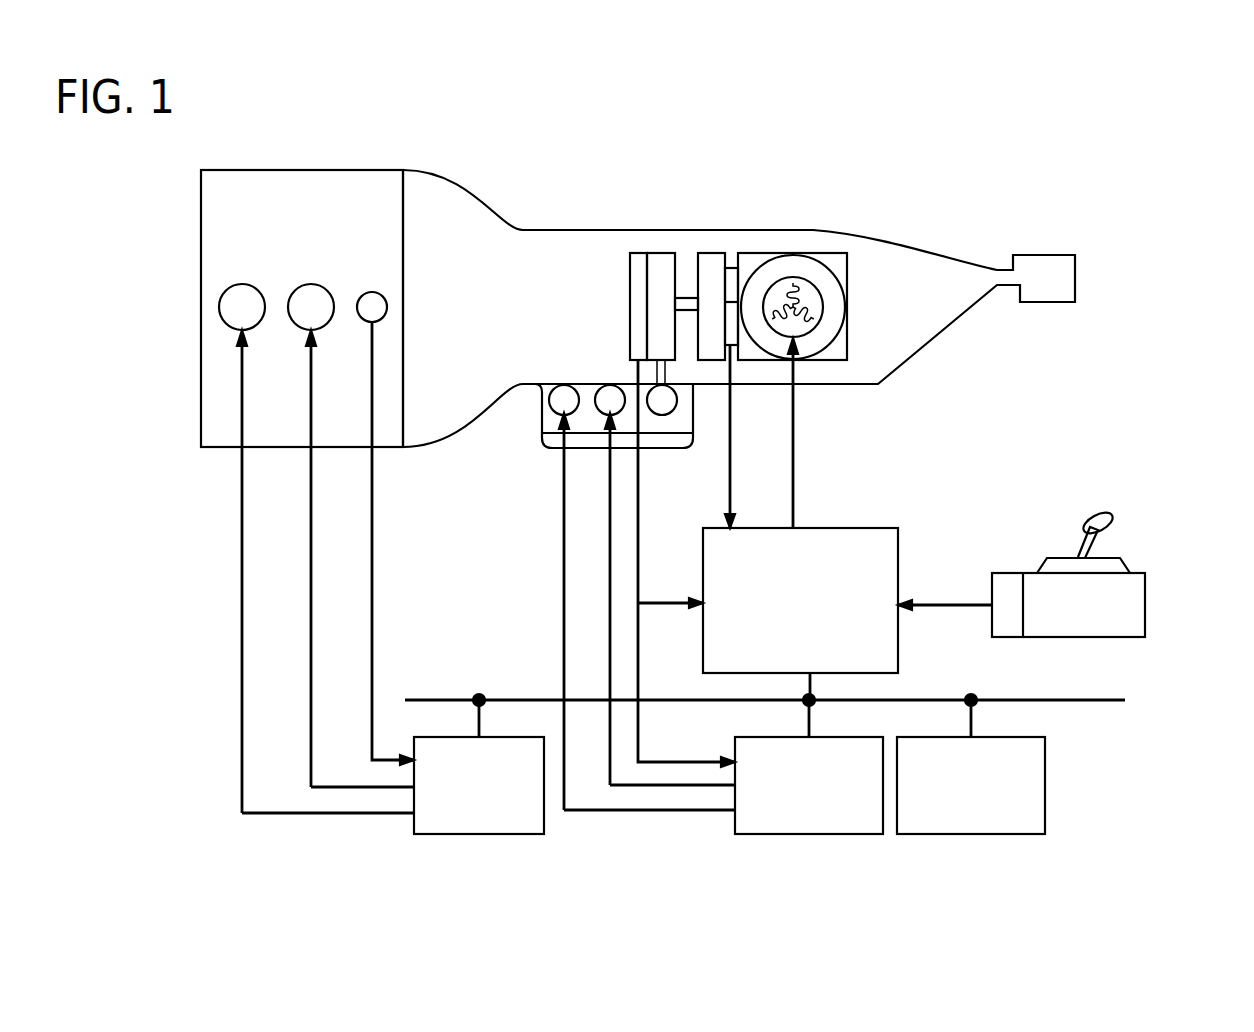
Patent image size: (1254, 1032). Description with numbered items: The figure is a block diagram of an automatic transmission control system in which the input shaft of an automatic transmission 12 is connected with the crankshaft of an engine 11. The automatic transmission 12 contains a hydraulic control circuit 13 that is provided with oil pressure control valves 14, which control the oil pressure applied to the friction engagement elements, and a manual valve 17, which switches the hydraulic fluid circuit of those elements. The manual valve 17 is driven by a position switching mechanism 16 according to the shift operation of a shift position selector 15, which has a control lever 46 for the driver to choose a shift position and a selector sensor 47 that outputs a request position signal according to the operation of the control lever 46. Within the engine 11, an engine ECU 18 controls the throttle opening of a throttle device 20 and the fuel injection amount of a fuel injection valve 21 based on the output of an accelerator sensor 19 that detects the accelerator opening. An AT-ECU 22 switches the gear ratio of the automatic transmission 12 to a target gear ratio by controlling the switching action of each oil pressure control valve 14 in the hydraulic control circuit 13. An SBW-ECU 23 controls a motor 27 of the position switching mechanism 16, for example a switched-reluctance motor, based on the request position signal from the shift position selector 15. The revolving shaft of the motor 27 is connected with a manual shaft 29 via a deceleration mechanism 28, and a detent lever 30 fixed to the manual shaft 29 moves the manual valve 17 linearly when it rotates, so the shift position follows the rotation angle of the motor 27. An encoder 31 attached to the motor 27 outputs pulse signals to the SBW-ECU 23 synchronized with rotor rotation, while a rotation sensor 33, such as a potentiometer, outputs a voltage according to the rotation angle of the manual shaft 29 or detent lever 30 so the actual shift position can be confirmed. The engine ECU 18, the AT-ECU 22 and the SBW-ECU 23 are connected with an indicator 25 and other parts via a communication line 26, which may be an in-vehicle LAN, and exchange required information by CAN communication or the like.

The engine 11 is at (300, 170).
The automatic transmission 12 is at (550, 230).
The hydraulic control circuit 13 is at (542, 420).
The oil pressure control valve 14 is at (560, 385).
The shift position selector 15 is at (1064, 540).
The position switching mechanism 16 is at (677, 200).
The manual valve 17 is at (664, 415).
The engine ECU 18 is at (478, 836).
The accelerator sensor 19 is at (372, 292).
The throttle device 20 is at (242, 284).
The fuel injection valve 21 is at (311, 284).
The AT-ECU 22 is at (808, 836).
The SBW-ECU 23 is at (855, 528).
The indicator 25 is at (968, 836).
The communication line 26 is at (1100, 702).
The motor 27 is at (793, 253).
The deceleration mechanism 28 is at (710, 253).
The manual shaft 29 is at (687, 298).
The detent lever 30 is at (660, 253).
The encoder 31 is at (732, 268).
The rotation sensor 33 is at (638, 253).
The control lever 46 is at (1100, 515).
The selector sensor 47 is at (1010, 573).